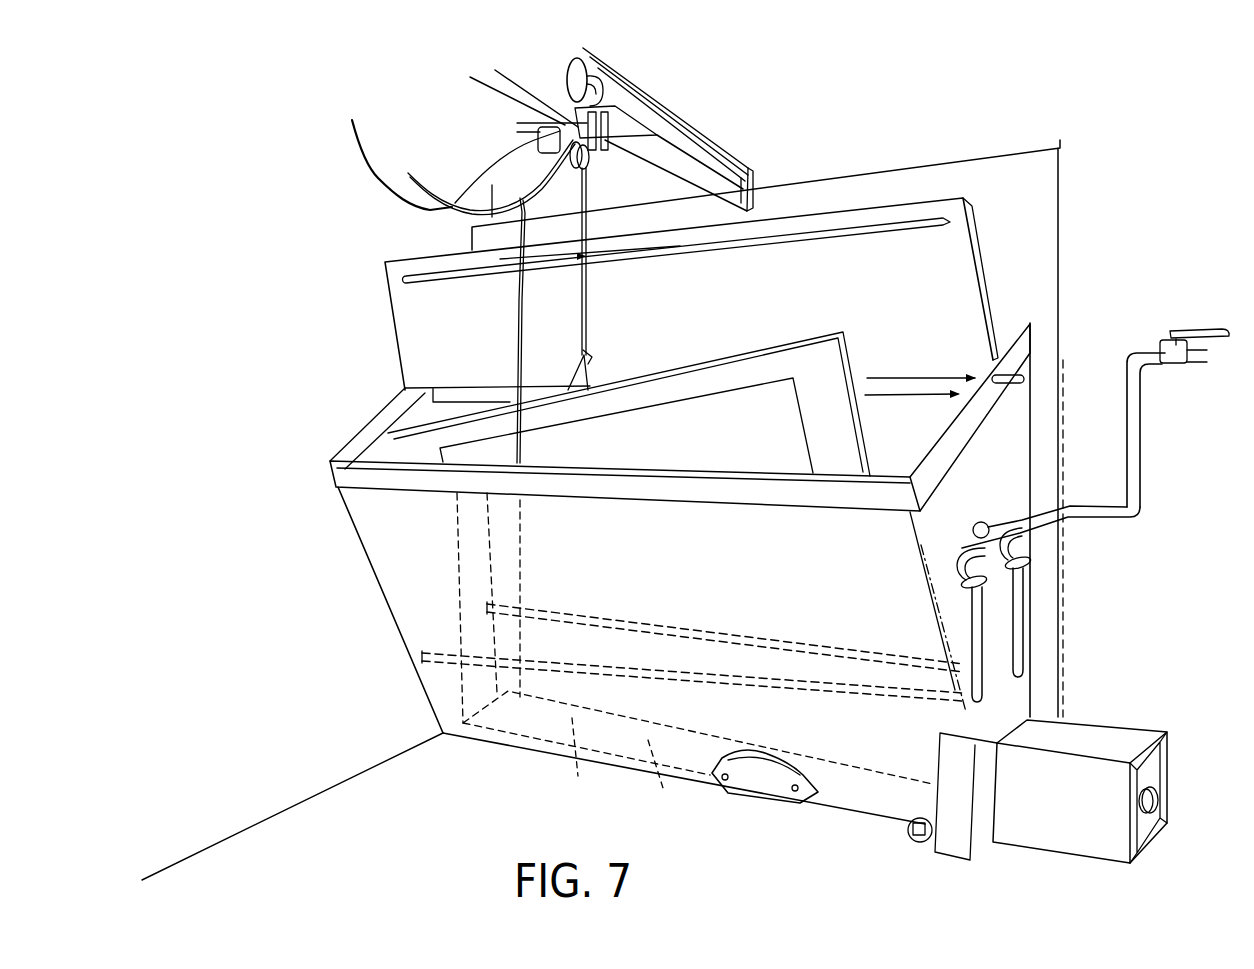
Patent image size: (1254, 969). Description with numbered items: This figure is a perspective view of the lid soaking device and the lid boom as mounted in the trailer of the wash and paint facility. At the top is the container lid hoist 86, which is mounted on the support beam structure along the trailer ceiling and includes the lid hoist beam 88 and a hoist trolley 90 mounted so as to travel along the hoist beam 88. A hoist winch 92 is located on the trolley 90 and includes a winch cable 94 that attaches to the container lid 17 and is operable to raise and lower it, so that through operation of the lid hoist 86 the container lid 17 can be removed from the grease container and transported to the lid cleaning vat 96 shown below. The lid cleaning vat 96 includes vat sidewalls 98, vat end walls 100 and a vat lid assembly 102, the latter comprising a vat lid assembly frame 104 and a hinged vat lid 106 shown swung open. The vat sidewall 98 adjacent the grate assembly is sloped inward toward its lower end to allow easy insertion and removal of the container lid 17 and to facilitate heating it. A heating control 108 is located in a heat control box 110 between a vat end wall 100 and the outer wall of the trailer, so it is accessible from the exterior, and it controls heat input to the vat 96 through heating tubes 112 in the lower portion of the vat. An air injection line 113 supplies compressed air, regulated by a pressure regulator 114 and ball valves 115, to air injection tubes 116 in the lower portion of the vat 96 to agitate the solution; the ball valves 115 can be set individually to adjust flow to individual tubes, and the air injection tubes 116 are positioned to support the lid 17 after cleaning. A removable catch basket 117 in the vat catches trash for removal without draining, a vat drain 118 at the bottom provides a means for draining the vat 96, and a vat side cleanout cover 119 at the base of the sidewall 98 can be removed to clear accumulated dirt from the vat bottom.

The container lid 17 is at (668, 388).
The container lid hoist 86 is at (672, 108).
The lid hoist beam 88 is at (722, 168).
The hoist trolley 90 is at (626, 122).
The hoist winch 92 is at (592, 152).
The winch cable 94 is at (587, 291).
The lid cleaning vat 96 is at (396, 598).
The vat sidewall 98 is at (775, 562).
The vat end wall 100 is at (924, 597).
The vat lid assembly 102 is at (978, 233).
The vat lid assembly frame 104 is at (963, 437).
The hinged vat lid 106 is at (887, 316).
The heating control 108 is at (1168, 763).
The heat control box 110 is at (1062, 838).
The heating tubes 112 is at (663, 778).
The air injection line 113 is at (1143, 401).
The pressure regulator 114 is at (990, 520).
The ball valves 115 is at (1030, 556).
The air injection tubes 116 is at (813, 640).
The removable catch basket 117 is at (587, 764).
The vat drain 118 is at (918, 843).
The vat side cleanout cover 119 is at (758, 788).